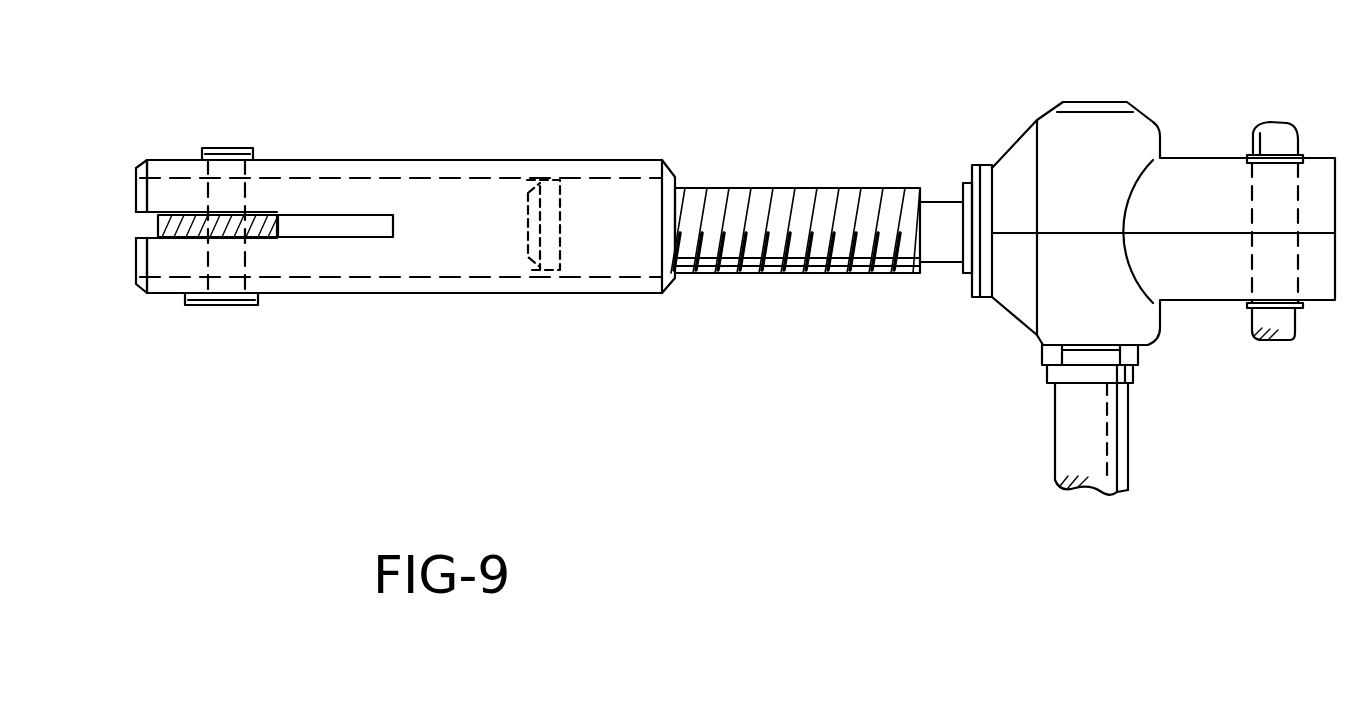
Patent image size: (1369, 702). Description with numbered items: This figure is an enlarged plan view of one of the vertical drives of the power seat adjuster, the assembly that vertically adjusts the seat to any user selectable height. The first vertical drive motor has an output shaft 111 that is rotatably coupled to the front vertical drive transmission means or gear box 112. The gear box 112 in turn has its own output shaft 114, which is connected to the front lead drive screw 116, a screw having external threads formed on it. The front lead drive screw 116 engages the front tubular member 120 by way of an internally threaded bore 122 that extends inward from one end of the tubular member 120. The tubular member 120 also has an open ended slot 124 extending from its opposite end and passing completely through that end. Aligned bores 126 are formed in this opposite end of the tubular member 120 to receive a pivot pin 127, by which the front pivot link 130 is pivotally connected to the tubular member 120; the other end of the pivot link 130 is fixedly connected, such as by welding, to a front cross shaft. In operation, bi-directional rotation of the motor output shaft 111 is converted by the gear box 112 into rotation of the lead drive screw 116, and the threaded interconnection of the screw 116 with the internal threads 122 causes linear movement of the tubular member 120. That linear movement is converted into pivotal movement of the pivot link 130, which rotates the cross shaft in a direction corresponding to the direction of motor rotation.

The output shaft 111 is at (1118, 433).
The front vertical drive transmission means or gear box 112 is at (1065, 135).
The output shaft 114 is at (943, 248).
The front lead drive screw 116 is at (697, 197).
The front tubular member 120 is at (438, 195).
The internally threaded bore 122 is at (487, 187).
The slot 124 is at (338, 228).
The aligned bores 126 is at (230, 150).
The pivot pin 127 is at (237, 303).
The front pivot link 130 is at (165, 178).